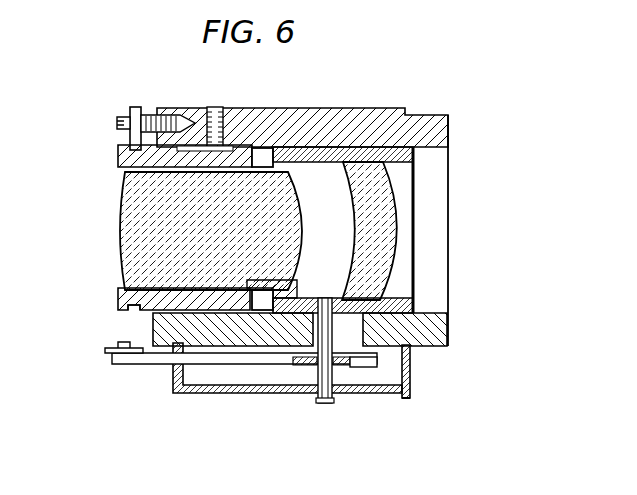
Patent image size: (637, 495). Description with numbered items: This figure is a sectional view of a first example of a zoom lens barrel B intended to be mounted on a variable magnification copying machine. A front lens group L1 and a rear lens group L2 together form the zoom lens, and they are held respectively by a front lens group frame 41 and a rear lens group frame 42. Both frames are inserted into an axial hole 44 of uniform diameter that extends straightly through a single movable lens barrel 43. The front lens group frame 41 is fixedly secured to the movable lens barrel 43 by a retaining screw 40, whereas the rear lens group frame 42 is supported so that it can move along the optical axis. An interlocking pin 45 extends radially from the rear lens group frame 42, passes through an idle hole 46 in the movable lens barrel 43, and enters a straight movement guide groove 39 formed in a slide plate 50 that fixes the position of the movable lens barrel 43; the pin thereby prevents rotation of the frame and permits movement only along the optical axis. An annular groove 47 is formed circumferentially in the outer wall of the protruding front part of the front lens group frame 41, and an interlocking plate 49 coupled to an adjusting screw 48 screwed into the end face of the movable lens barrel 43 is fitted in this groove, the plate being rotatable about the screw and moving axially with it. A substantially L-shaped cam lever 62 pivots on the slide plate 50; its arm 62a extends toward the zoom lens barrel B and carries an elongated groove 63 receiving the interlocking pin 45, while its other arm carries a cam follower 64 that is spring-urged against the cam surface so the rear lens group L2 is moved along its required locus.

The zoom lens barrel B is at (465, 117).
The straight movement guide groove 39 is at (360, 388).
The retaining screw 40 is at (225, 108).
The front lens group frame 41 is at (127, 160).
The rear lens group frame 42 is at (415, 157).
The movable lens barrel 43 is at (292, 108).
The axial hole 44 is at (435, 313).
The interlocking pin 45 is at (340, 367).
The idle hole 46 is at (410, 352).
The annular groove 47 is at (132, 311).
The adjusting screw 48 is at (125, 117).
The interlocking plate 49 is at (138, 110).
The slide plate 50 is at (407, 394).
The cam lever 62 is at (203, 370).
The arm 62a is at (300, 366).
The elongated groove 63 is at (320, 364).
The cam follower 64 is at (104, 343).
The front lens group L1 is at (130, 218).
The rear lens group L2 is at (388, 233).